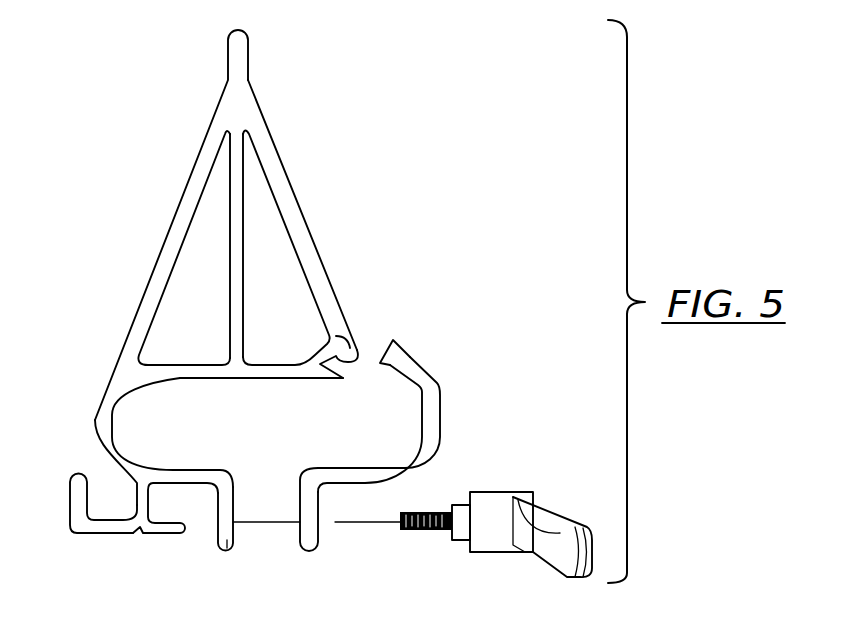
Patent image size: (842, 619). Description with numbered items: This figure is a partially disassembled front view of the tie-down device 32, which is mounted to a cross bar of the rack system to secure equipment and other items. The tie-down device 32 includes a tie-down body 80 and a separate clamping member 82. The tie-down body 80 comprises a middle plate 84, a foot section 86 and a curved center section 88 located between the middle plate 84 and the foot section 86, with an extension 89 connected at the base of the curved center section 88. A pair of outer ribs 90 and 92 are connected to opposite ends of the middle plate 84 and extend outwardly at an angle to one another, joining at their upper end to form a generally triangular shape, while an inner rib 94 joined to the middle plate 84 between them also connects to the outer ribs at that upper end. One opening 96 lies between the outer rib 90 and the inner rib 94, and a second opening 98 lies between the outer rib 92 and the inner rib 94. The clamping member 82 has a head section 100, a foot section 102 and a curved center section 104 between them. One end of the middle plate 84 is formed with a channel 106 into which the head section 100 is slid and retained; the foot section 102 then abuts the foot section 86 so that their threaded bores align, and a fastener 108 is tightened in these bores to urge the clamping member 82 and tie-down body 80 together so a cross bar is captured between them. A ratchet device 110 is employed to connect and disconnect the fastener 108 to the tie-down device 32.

The tie-down device 32 is at (427, 60).
The tie-down body 80 is at (157, 185).
The clamping member 82 is at (470, 425).
The middle plate 84 is at (203, 379).
The foot section 86 is at (226, 550).
The curved center section 88 is at (95, 428).
The extension 89 is at (75, 527).
The outer rib 90 is at (198, 153).
The outer rib 92 is at (283, 164).
The inner rib 94 is at (245, 290).
The opening 96 is at (213, 237).
The second opening 98 is at (263, 228).
The head section 100 is at (401, 343).
The foot section 102 is at (311, 546).
The curved center section 104 is at (438, 393).
The channel 106 is at (350, 358).
The fastener 108 is at (423, 531).
The ratchet device 110 is at (535, 481).